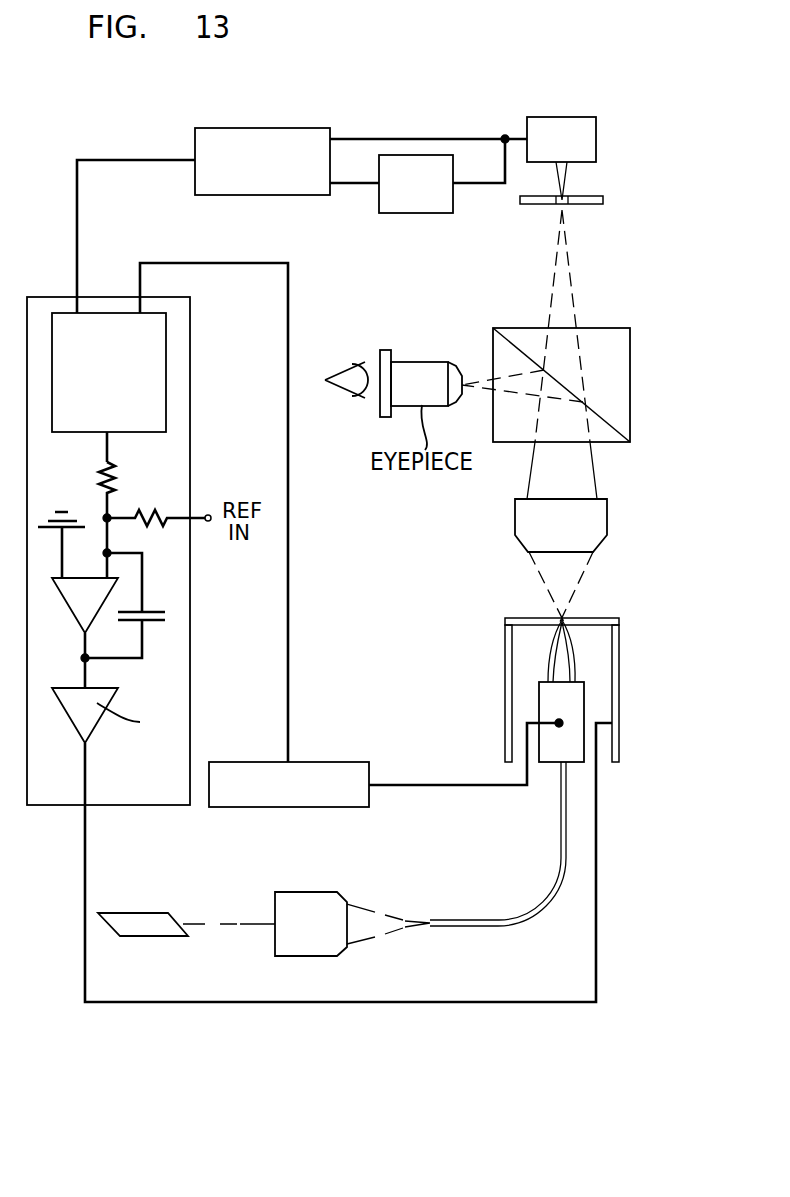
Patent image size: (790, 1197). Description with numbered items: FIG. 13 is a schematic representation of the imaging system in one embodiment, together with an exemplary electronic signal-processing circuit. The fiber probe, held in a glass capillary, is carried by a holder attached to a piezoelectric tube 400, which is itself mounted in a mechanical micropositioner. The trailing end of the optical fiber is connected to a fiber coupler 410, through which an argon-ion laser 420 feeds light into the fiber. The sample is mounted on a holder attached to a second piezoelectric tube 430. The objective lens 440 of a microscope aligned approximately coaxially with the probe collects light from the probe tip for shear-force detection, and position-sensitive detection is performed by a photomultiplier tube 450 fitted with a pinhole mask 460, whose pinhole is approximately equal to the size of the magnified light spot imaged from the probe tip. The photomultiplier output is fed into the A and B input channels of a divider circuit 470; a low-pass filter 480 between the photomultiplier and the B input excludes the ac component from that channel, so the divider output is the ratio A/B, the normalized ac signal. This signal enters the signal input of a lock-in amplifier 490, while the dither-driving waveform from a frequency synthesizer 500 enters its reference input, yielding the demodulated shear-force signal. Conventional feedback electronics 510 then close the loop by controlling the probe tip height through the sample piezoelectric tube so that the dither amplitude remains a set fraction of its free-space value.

The piezoelectric tube 400 is at (549, 762).
The fiber coupler 410 is at (312, 892).
The argon-ion laser 420 is at (145, 913).
The second piezoelectric tube 430 is at (619, 678).
The objective lens 440 is at (607, 518).
The photomultiplier tube 450 is at (570, 117).
The pinhole mask 460 is at (600, 196).
The divider circuit 470 is at (283, 128).
The low-pass filter 480 is at (415, 213).
The lock-in amplifier 490 is at (166, 355).
The frequency synthesizer 500 is at (320, 762).
The feedback electronics 510 is at (150, 551).